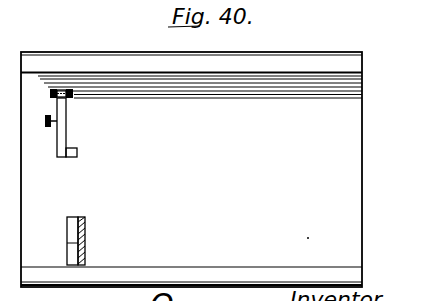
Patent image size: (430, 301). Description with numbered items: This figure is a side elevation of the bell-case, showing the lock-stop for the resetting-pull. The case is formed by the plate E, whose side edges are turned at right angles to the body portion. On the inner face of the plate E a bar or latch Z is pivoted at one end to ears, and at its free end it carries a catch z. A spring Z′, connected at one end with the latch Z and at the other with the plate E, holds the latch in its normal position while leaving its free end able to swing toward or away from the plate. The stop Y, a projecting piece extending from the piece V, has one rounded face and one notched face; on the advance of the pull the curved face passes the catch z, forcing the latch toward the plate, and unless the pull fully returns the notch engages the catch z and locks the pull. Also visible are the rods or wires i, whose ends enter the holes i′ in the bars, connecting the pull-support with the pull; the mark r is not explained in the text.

The plate E is at (212, 191).
The rods or wires i is at (50, 94).
The holes i′ is at (73, 96).
The bar or latch Z is at (66, 113).
The spring Z′ is at (40, 125).
The catch z is at (77, 152).
The stop Y is at (66, 241).
The hatched plate r is at (85, 233).